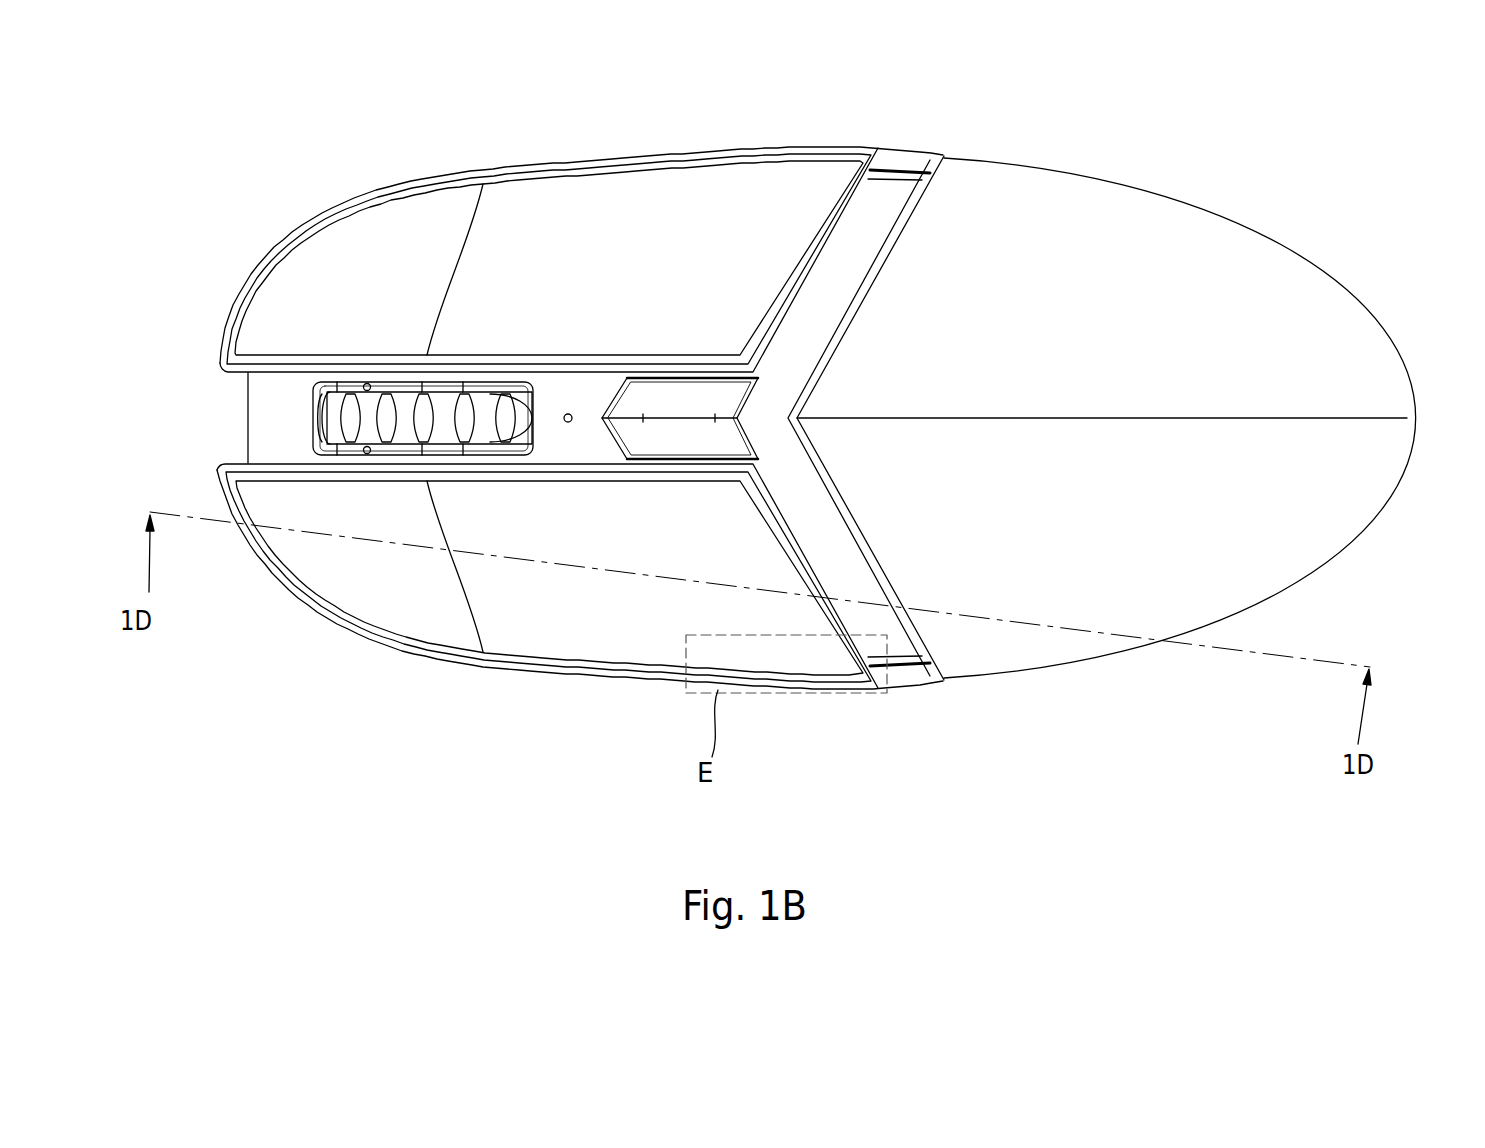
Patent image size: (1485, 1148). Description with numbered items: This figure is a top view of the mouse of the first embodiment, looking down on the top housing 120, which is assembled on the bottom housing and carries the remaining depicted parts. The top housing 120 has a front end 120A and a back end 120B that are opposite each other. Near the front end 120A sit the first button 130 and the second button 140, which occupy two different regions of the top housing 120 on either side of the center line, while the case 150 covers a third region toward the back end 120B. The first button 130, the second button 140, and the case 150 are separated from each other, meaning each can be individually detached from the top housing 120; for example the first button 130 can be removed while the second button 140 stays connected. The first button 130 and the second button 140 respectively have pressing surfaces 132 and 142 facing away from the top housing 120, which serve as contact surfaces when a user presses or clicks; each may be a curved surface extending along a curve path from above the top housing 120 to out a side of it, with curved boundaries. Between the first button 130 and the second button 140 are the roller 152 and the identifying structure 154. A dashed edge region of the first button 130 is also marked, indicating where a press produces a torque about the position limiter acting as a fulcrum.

The top housing 120 is at (888, 195).
The front end 120A is at (236, 386).
The back end 120B is at (1414, 374).
The first button 130 is at (382, 578).
The pressing surface 132 is at (612, 650).
The second button 140 is at (352, 258).
The pressing surface 142 is at (613, 212).
The case 150 is at (1253, 255).
The roller 152 is at (333, 407).
The identifying structure 154 is at (698, 392).